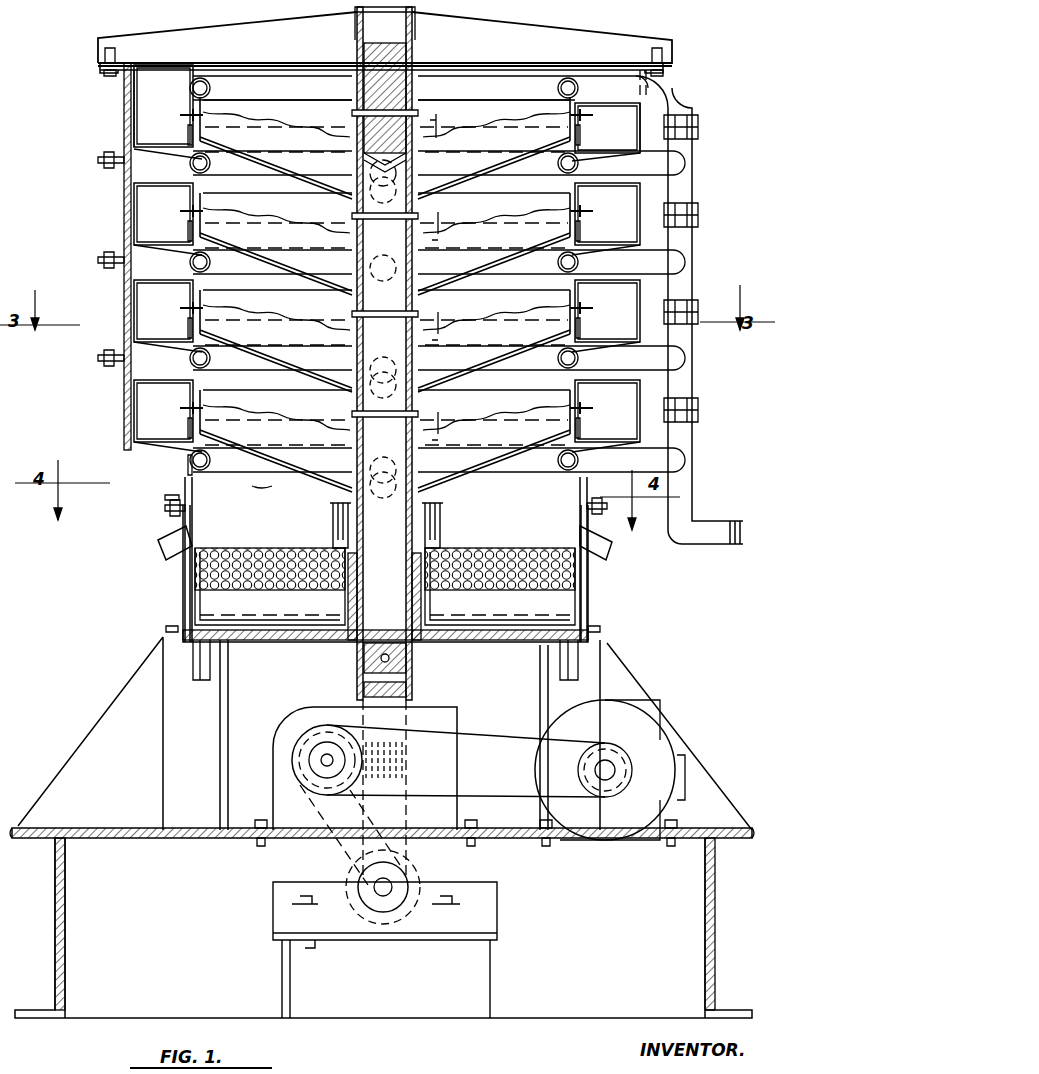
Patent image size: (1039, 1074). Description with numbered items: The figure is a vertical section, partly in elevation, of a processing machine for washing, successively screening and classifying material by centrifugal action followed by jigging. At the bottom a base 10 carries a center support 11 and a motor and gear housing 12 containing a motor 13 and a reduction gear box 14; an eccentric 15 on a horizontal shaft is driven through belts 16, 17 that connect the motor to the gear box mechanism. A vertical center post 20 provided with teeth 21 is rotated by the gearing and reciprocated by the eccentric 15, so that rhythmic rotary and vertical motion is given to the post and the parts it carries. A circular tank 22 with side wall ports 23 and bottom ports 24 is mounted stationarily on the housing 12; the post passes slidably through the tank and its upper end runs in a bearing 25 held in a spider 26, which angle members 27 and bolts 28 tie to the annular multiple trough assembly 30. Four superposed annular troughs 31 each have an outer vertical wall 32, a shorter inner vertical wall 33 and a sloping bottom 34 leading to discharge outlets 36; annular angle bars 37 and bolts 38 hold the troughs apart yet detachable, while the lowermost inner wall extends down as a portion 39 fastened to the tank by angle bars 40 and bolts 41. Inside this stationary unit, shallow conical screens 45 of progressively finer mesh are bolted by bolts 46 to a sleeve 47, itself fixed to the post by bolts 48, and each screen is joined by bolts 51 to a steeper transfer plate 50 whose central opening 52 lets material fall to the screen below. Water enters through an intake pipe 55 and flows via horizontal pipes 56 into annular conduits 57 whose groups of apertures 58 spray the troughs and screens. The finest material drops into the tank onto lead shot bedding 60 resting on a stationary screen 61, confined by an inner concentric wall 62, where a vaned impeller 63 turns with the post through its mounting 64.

The base 10 is at (715, 942).
The center support 11 is at (496, 928).
The motor and gear housing 12 is at (628, 704).
The motor 13 is at (650, 748).
The reduction gear box and contents 14 is at (439, 718).
The eccentric 15 is at (396, 906).
The belt 16 is at (512, 732).
The belt 17 is at (306, 845).
The vertical center post 20 is at (356, 56).
The teeth 21 is at (396, 768).
The circular tank 22 is at (185, 583).
The side wall ports 23 is at (164, 551).
The bottom ports 24 is at (194, 660).
The bearing 25 is at (412, 50).
The spider 26 is at (216, 28).
The angle members 27 is at (100, 68).
The bolts 28 is at (108, 74).
The annular box-form multiple trough assembly 30 is at (135, 111).
The annular box-form trough 31 is at (136, 122).
The peripheral outer vertical wall 32 is at (132, 102).
The inner vertical wall 33 is at (187, 131).
The bottom 34 is at (195, 154).
The discharge outlets 36 is at (383, 341).
The angle bars 37 is at (122, 145).
The bolts 38 is at (98, 161).
The downward extension of inner wall 39 is at (185, 470).
The angle bars 40 is at (167, 514).
The bolts 41 is at (164, 497).
The screen 45 is at (469, 120).
The bolts 46 is at (418, 318).
The sleeve 47 is at (357, 98).
The bolts 48 is at (418, 112).
The transfer plate 50 is at (252, 174).
The bolts 51 is at (181, 109).
The central opening 52 is at (344, 228).
The intake pipe 55 is at (681, 522).
The horizontal pipes 56 is at (657, 164).
The annular conduit 57 is at (199, 78).
The groups of apertures 58 is at (193, 88).
The lead shot bedding material 60 is at (209, 549).
The stationary screen 61 is at (280, 590).
The inner vertical concentric wall 62 is at (440, 530).
The vaned impeller 63 is at (510, 598).
The mounting 64 is at (427, 594).